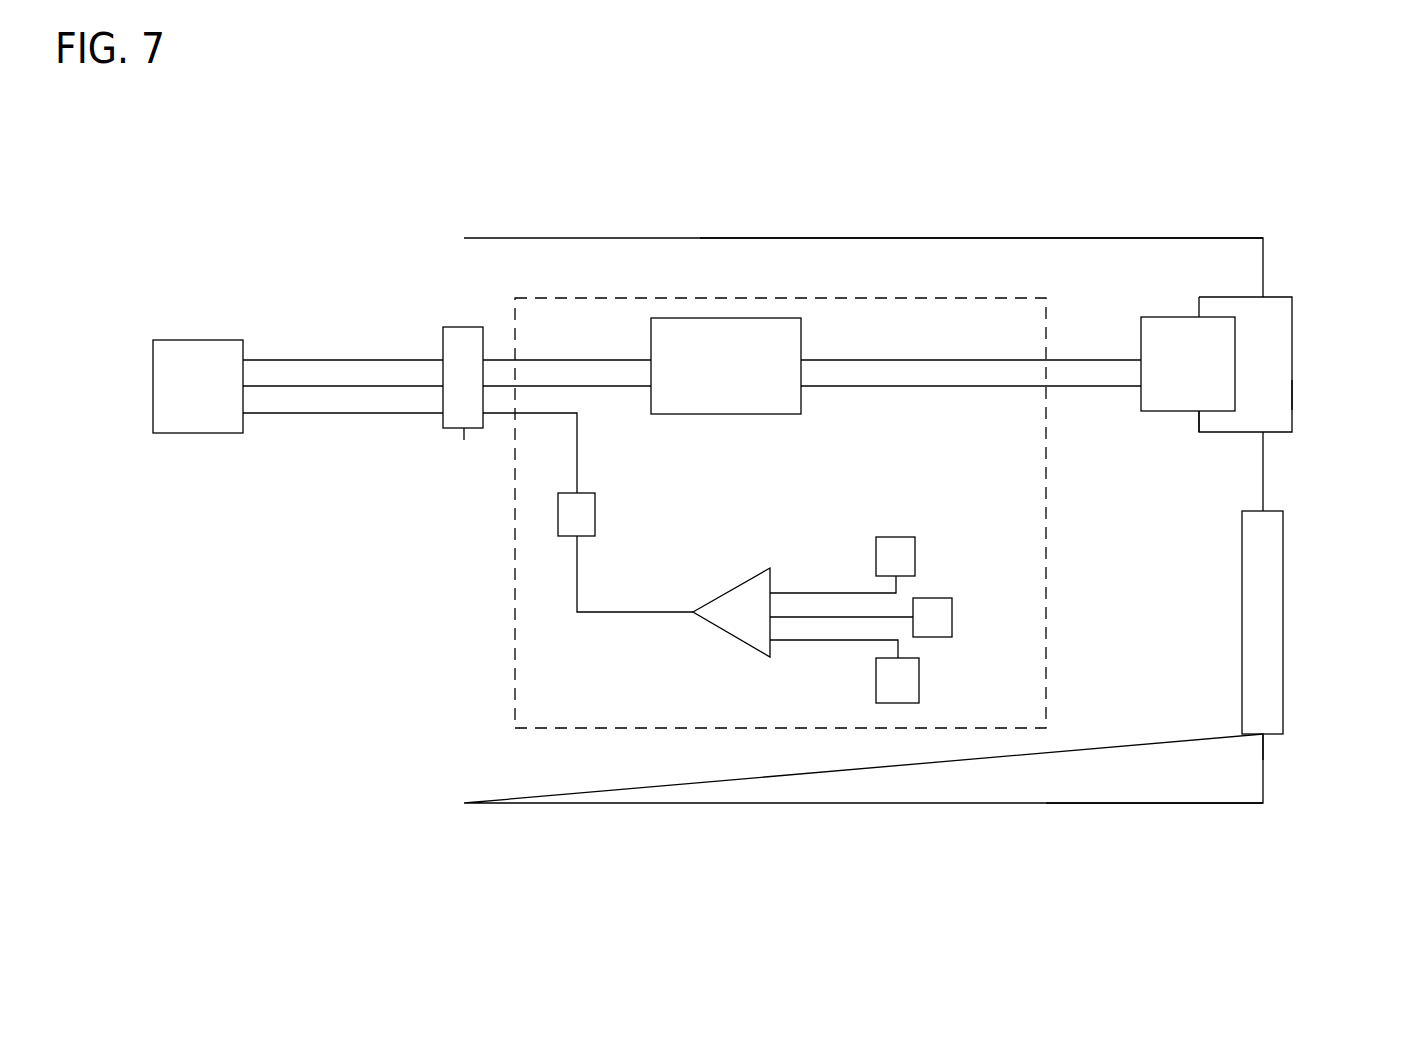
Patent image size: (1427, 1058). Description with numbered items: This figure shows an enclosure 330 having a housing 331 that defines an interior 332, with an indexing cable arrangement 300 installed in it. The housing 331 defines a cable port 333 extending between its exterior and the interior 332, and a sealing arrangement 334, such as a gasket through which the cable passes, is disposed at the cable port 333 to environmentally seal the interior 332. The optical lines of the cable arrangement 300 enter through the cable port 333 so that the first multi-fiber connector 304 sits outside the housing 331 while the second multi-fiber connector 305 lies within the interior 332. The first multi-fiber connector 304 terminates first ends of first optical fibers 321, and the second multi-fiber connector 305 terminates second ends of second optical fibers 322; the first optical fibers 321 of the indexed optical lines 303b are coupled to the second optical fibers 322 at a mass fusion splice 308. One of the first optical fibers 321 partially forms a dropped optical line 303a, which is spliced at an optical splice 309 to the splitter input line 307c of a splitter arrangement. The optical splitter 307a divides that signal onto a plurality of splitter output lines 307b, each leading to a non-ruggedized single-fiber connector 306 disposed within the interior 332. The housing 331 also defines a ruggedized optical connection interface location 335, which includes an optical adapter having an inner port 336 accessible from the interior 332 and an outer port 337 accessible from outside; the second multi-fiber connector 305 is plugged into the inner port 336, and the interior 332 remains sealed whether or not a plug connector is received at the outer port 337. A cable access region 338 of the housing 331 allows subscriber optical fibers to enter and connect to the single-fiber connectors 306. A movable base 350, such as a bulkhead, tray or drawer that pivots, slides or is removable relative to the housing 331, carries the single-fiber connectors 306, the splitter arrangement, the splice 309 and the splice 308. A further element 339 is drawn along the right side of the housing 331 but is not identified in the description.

The cable arrangement 300 is at (548, 453).
The first multi-fiber connector 304 is at (178, 338).
The second multi-fiber connector 305 is at (1170, 317).
The non-ruggedized single-fiber connector 306 is at (906, 558).
The optical splitter 307a is at (733, 615).
The splitter output lines 307b is at (825, 592).
The splitter input line 307c is at (614, 618).
The mass fusion splice 308 is at (694, 391).
The optical splice 309 is at (596, 512).
The dropped optical line 303a is at (305, 415).
The indexed optical lines 303b is at (548, 360).
The first optical fibers 321 is at (302, 358).
The second optical fibers 322 is at (890, 388).
The enclosure 330 is at (600, 238).
The housing 331 is at (1000, 238).
The interior 332 is at (1165, 742).
The cable port 333 is at (465, 430).
The sealing arrangement 334 is at (447, 328).
The optical connection interface location 335 is at (1282, 295).
The inner port 336 is at (1197, 420).
The outer port 337 is at (1292, 395).
The cable access region 338 is at (1265, 737).
The elongated member 339 is at (1283, 613).
The movable base 350 is at (801, 730).